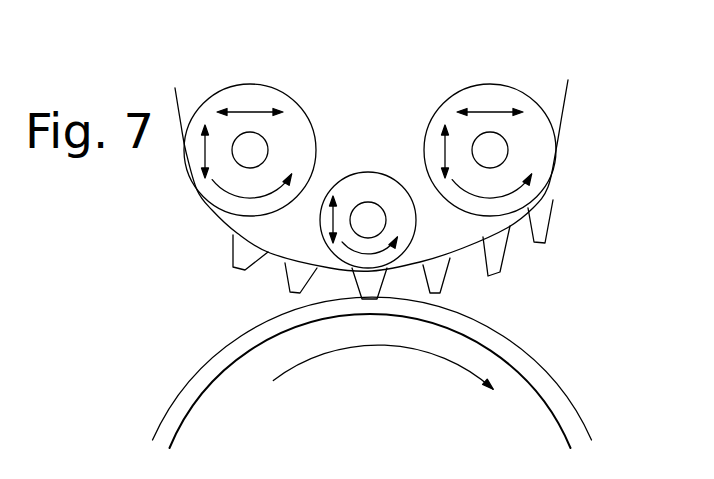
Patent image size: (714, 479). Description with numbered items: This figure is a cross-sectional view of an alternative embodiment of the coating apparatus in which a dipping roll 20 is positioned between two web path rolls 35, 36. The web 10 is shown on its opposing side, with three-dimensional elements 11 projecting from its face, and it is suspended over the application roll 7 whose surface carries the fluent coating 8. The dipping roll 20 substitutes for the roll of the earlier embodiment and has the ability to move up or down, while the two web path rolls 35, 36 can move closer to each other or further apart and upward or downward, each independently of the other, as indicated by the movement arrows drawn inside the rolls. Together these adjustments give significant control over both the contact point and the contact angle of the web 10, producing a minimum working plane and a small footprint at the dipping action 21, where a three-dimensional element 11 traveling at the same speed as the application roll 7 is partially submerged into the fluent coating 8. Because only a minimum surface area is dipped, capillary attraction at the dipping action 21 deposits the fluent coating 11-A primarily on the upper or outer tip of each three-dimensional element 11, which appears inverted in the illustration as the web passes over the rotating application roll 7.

The application roll 7 is at (575, 433).
The fluent coating 8 is at (201, 355).
The web 10 is at (302, 246).
The three-dimensional element 11 is at (221, 268).
The fluent coating on three-dimensional element 11-A is at (510, 277).
The dipping roll 20 is at (369, 162).
The dipping action 21 is at (367, 324).
The web path roll 35 is at (250, 74).
The web path roll 36 is at (490, 74).